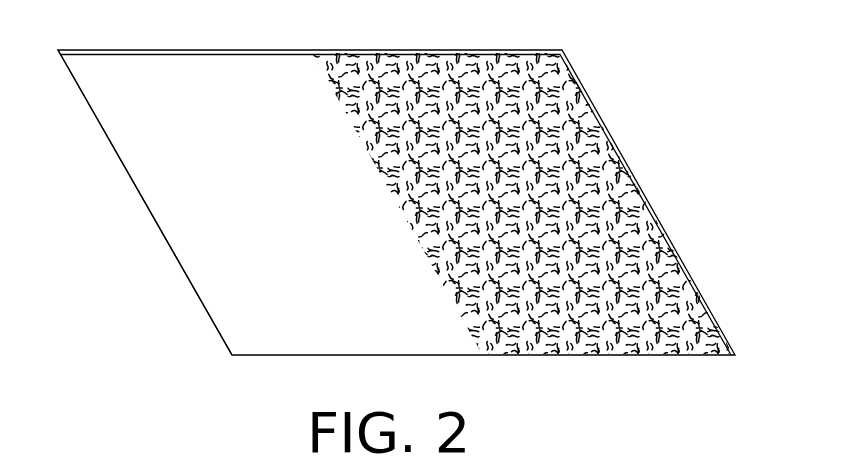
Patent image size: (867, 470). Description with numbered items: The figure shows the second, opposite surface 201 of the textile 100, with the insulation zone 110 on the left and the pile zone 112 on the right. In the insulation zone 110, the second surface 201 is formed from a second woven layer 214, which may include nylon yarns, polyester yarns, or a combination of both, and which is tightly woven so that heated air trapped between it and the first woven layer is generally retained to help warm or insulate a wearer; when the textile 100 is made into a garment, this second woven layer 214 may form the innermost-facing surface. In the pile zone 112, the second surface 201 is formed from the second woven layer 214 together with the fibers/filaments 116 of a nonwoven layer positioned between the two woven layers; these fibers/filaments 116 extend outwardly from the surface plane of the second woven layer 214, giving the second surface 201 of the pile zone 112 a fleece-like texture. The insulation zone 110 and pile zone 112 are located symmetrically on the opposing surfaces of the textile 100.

The textile 100 is at (713, 82).
The insulation zone 110 is at (60, 36).
The pile zone 112 is at (558, 36).
The fibers/filaments of the nonwoven layer 116 is at (560, 335).
The second surface 201 is at (136, 133).
The second woven layer 214 is at (222, 189).